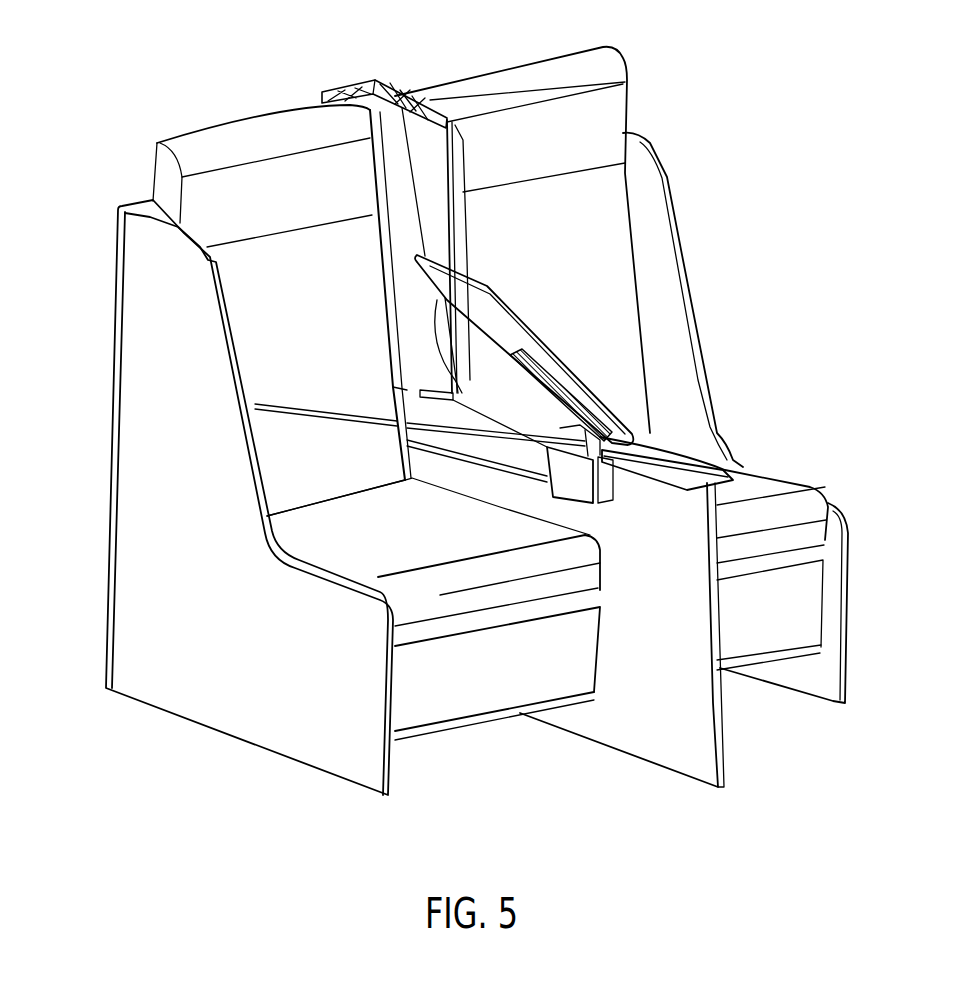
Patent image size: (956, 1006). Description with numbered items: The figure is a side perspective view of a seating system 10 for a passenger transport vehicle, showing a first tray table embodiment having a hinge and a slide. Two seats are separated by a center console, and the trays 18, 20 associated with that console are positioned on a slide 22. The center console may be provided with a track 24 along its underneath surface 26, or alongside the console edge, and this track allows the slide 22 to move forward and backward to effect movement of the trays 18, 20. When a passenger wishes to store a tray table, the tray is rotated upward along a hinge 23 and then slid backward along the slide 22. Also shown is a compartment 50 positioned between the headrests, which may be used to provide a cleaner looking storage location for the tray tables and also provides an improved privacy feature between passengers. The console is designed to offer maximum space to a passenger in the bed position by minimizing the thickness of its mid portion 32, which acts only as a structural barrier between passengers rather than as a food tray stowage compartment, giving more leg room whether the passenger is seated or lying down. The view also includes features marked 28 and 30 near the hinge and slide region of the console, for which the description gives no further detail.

The seating system 10 is at (214, 99).
The tray 18 is at (408, 85).
The tray 20 is at (508, 320).
The slide 22 is at (545, 478).
The hinge 23 is at (267, 516).
The track 24 is at (255, 404).
The underneath surface 26 is at (632, 482).
The hinge slot 28 is at (530, 408).
The armrest 30 is at (683, 467).
The mid portion 32 is at (718, 668).
The compartment 50 is at (347, 88).